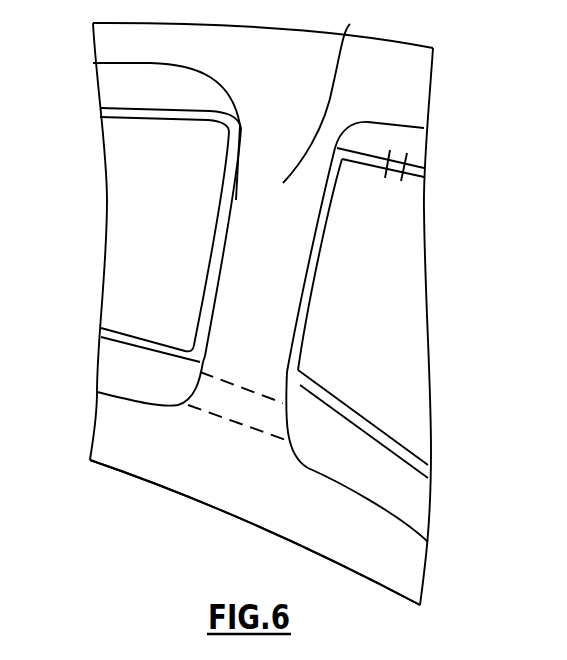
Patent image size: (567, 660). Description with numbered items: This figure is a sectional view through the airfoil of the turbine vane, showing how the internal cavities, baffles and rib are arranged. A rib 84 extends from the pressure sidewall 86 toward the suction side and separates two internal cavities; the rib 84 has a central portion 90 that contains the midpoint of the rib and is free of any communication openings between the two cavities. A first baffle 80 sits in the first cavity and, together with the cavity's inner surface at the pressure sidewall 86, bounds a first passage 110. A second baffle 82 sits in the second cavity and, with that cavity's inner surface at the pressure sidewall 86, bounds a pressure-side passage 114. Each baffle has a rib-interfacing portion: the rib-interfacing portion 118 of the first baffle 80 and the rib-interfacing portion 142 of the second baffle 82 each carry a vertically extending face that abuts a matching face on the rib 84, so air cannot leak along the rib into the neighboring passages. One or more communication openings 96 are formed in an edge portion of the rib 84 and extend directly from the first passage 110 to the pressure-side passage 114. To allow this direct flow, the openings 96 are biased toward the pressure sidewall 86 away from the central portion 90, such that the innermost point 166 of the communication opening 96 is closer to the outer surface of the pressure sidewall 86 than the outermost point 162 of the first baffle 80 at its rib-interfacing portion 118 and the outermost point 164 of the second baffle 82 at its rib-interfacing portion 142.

The first baffle 80 is at (350, 412).
The second baffle 82 is at (115, 332).
The rib 84 is at (350, 24).
The pressure sidewall 86 is at (263, 510).
The central portion 90 is at (268, 243).
The communication opening 96 is at (242, 405).
The first passage 110 is at (403, 492).
The pressure-side passage 114 is at (110, 368).
The rib-interfacing portion 118 is at (317, 272).
The rib-interfacing portion 142 is at (218, 217).
The outermost point 162 is at (287, 373).
The outermost point 164 is at (199, 363).
The innermost point 166 is at (223, 380).